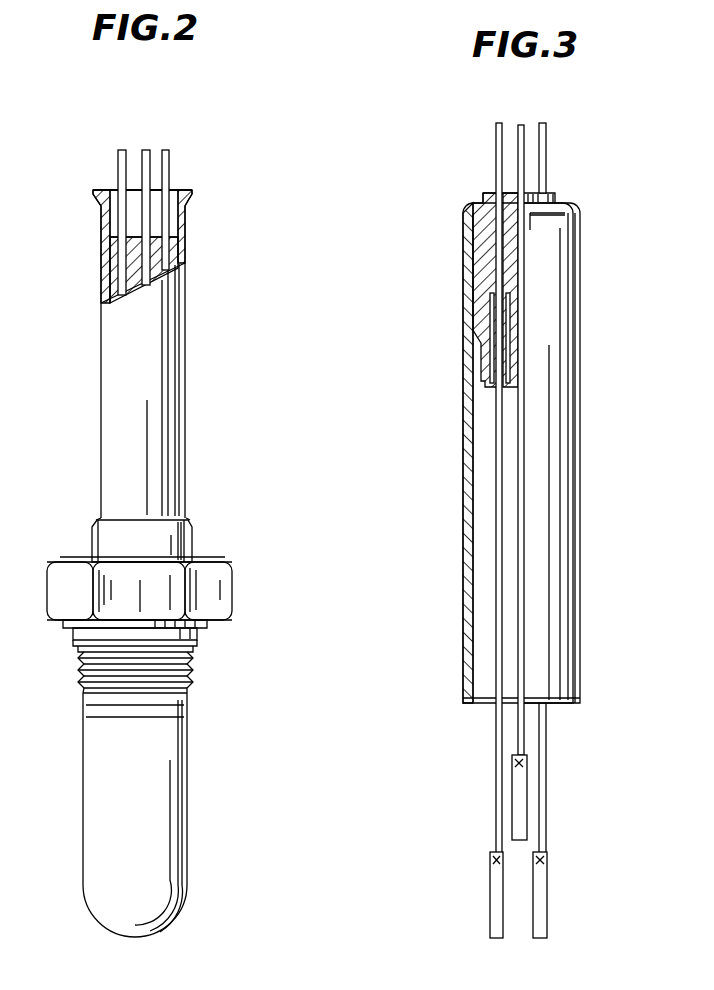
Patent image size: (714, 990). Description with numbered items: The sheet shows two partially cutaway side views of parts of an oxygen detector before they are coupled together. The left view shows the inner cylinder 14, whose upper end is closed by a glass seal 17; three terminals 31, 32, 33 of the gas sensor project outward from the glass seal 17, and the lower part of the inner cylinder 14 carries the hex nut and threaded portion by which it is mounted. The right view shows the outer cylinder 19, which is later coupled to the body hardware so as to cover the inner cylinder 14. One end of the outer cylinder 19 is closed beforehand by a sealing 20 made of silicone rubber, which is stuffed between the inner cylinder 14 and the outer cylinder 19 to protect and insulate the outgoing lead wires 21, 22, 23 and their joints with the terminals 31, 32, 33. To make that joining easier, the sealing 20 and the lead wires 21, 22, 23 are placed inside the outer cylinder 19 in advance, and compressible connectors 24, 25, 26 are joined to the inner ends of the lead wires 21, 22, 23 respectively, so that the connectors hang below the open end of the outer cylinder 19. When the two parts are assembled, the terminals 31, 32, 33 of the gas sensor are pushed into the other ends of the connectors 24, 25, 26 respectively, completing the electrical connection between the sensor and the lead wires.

In FIG. 2, the inner cylinder 14 is at (170, 360).
In FIG. 2, the glass seal 17 is at (112, 272).
In FIG. 2, the terminal 31 is at (120, 160).
In FIG. 2, the terminal 32 is at (146, 150).
In FIG. 2, the terminal 33 is at (170, 161).
In FIG. 3, the outer cylinder 19 is at (552, 316).
In FIG. 3, the sealing 20 is at (478, 266).
In FIG. 3, the lead wire 21 is at (497, 136).
In FIG. 3, the lead wire 22 is at (519, 175).
In FIG. 3, the lead wire 23 is at (547, 137).
In FIG. 3, the compressible connector 24 is at (496, 888).
In FIG. 3, the compressible connector 25 is at (525, 775).
In FIG. 3, the compressible connector 26 is at (542, 886).